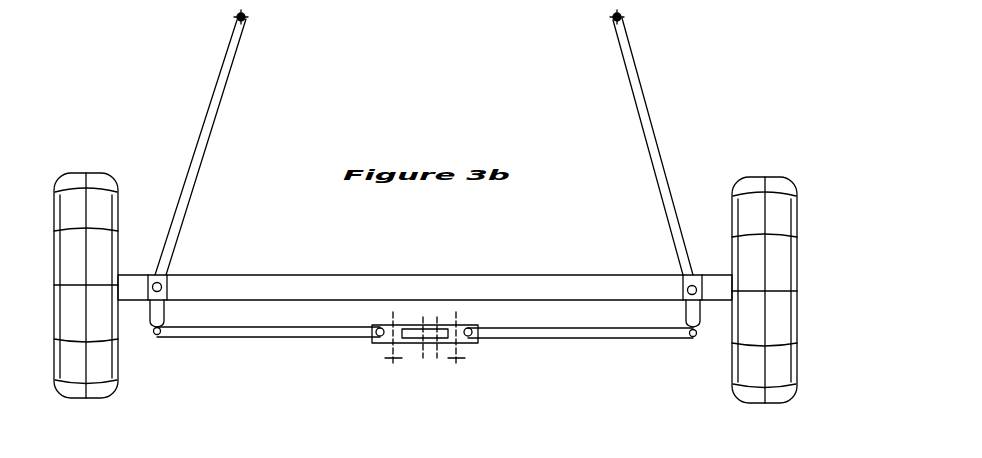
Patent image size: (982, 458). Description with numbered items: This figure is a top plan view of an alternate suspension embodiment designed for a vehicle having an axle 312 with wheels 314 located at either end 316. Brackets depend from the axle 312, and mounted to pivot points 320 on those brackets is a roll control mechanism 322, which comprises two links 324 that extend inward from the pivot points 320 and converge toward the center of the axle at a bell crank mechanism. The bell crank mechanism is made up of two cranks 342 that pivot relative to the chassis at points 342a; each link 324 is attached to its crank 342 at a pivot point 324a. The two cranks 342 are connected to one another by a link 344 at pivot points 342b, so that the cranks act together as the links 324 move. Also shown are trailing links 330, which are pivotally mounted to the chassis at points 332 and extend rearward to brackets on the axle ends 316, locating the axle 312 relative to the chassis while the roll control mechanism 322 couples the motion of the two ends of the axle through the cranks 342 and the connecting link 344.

The axle 312 is at (272, 288).
The wheels 314 is at (102, 180).
The axle end 316 is at (136, 286).
The pivot point 320 is at (158, 334).
The roll control mechanism 322 is at (371, 404).
The link 324 is at (250, 332).
The pivot point 324a is at (379, 329).
The trailing link 330 is at (213, 108).
The pivot point 332 is at (244, 20).
The crank 342 is at (381, 343).
The pivot point 342a is at (455, 365).
The pivot point 342b is at (437, 344).
The link 344 is at (410, 331).